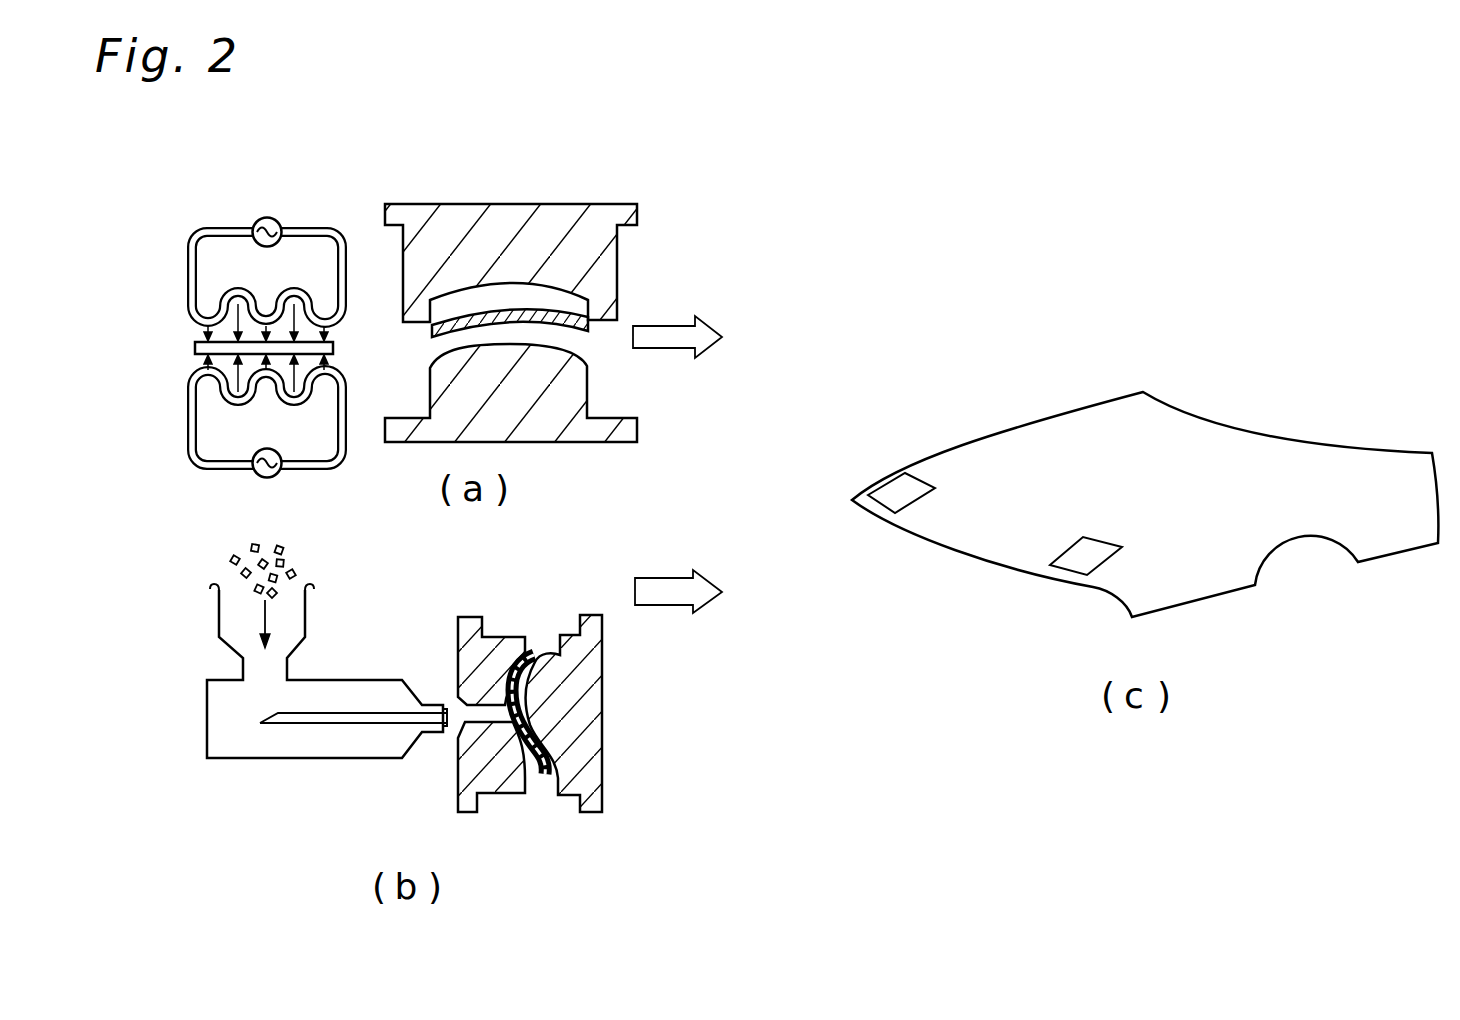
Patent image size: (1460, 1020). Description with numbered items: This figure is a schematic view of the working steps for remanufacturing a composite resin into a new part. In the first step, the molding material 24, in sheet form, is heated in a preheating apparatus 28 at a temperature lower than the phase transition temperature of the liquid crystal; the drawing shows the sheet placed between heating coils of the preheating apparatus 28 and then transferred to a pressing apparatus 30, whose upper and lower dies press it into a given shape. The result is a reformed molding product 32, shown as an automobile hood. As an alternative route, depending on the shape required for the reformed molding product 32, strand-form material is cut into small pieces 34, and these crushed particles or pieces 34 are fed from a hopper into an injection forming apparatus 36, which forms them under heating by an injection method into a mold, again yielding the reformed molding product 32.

The preheating apparatus 28 is at (307, 227).
The molding material 24 is at (333, 348).
The pressing apparatus 30 is at (525, 204).
The small pieces 34 is at (297, 570).
The injection forming apparatus 36 is at (390, 680).
The reformed molding product 32 is at (1020, 423).